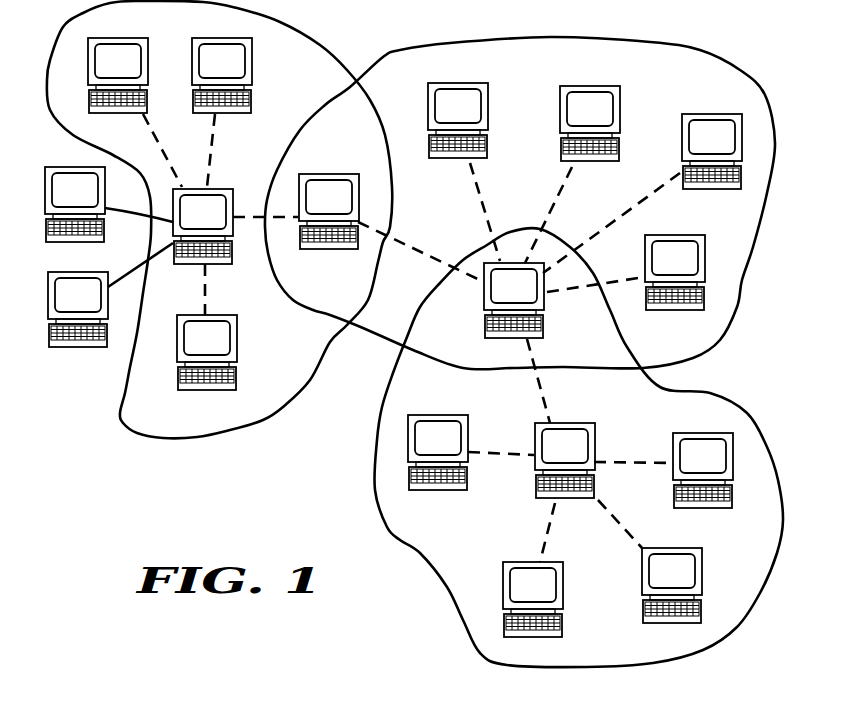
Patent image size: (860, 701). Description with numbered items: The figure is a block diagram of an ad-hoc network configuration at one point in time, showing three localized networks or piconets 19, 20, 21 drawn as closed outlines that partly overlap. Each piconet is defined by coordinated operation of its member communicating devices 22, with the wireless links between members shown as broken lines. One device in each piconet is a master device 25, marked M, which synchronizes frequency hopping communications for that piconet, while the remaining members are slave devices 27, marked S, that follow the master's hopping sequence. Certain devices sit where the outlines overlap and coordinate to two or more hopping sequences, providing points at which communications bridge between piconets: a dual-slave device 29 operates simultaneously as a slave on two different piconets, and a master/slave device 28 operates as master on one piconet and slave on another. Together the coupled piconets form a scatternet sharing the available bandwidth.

The localized network 19 is at (283, 393).
The localized network 20 is at (365, 327).
The localized network 21 is at (380, 403).
The communicating device 22 is at (148, 47).
The master device 25 is at (223, 264).
The slave device 27 is at (430, 415).
The master/slave device 28 is at (544, 323).
The dual-slave device 29 is at (327, 250).